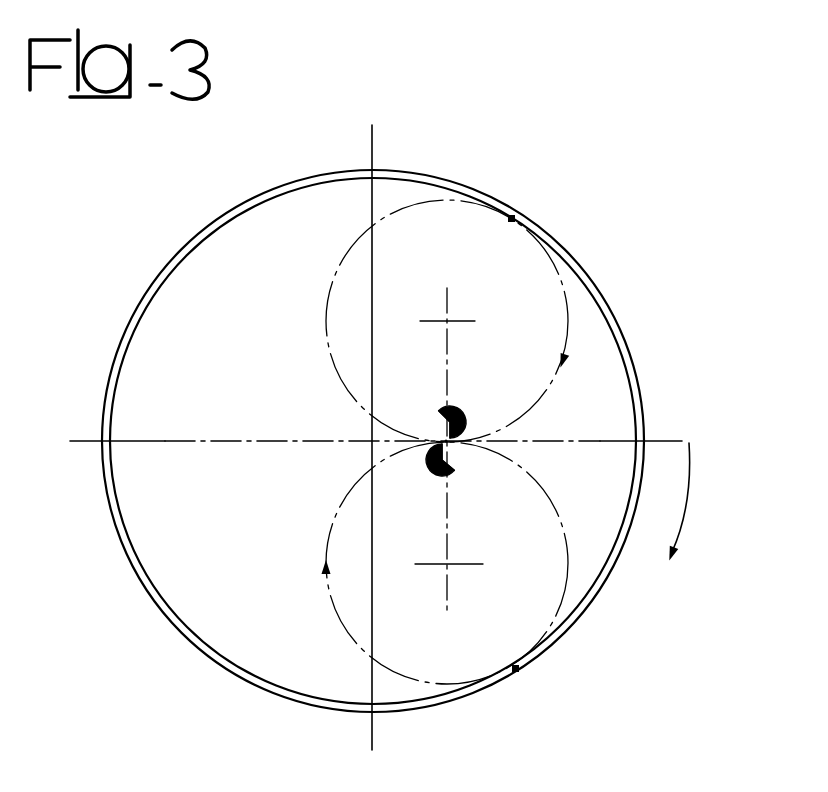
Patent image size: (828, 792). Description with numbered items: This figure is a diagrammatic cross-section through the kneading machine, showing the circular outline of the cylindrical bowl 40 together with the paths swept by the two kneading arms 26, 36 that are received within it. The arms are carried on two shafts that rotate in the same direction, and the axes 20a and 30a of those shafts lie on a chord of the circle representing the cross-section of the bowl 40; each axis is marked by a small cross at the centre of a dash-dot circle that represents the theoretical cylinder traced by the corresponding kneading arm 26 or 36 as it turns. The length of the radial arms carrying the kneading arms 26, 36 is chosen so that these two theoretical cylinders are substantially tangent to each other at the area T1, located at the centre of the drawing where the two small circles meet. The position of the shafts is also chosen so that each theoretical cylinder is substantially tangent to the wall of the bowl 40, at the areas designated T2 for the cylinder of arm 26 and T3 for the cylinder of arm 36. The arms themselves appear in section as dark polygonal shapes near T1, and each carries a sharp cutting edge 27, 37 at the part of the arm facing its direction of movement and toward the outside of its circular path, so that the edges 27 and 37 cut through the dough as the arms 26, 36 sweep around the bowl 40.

The cylindrical bowl 40 is at (632, 357).
The axis of shaft 30 30a is at (449, 319).
The axis of shaft 20 20a is at (450, 570).
The kneading arm 36 is at (463, 410).
The cutting edge 37 is at (434, 431).
The kneading arm 26 is at (445, 477).
The cutting edge 27 is at (459, 453).
The tangency area between the theoretical cylinders T1 is at (440, 441).
The tangency area with the bowl wall T2 is at (515, 671).
The tangency area with the bowl wall T3 is at (511, 218).